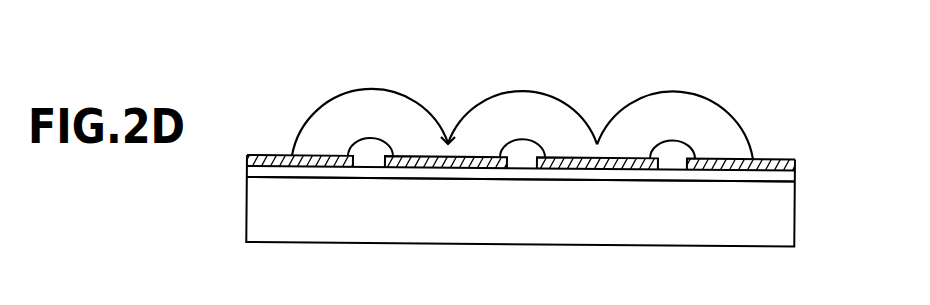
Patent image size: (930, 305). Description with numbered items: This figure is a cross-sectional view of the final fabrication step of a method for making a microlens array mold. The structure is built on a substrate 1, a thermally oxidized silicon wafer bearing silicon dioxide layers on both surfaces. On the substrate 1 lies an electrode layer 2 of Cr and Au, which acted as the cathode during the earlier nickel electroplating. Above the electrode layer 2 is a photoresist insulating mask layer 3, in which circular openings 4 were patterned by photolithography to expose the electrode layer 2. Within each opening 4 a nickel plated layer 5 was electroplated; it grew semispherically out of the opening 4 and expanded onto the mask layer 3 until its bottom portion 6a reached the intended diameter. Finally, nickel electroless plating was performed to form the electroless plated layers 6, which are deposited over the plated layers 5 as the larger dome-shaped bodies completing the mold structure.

The substrate 1 is at (790, 218).
The electrode layer 2 is at (790, 177).
The mask layer 3 is at (796, 153).
The opening 4 is at (522, 158).
The plated layer 5 is at (673, 149).
The electroless plated layer 6 is at (673, 92).
The bottom portion 6a is at (447, 143).